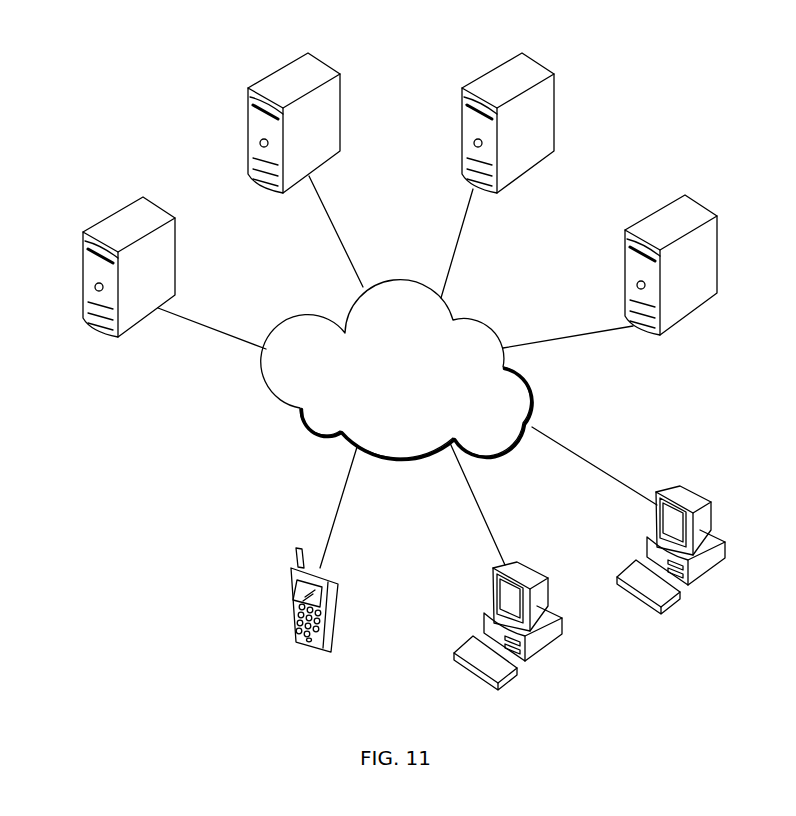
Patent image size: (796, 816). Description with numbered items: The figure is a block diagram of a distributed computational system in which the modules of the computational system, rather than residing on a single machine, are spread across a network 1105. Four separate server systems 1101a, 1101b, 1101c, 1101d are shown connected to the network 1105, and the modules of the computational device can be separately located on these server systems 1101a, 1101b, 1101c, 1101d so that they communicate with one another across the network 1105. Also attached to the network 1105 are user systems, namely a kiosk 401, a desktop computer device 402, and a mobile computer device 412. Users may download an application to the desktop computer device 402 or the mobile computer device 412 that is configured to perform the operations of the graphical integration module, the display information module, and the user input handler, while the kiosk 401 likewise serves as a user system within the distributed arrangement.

The server system 1101a is at (100, 222).
The server system 1101b is at (268, 76).
The server system 1101c is at (535, 65).
The server system 1101d is at (702, 203).
The network 1105 is at (378, 403).
The kiosk 401 is at (547, 650).
The desktop computer device 402 is at (292, 632).
The mobile computer device 412 is at (710, 573).